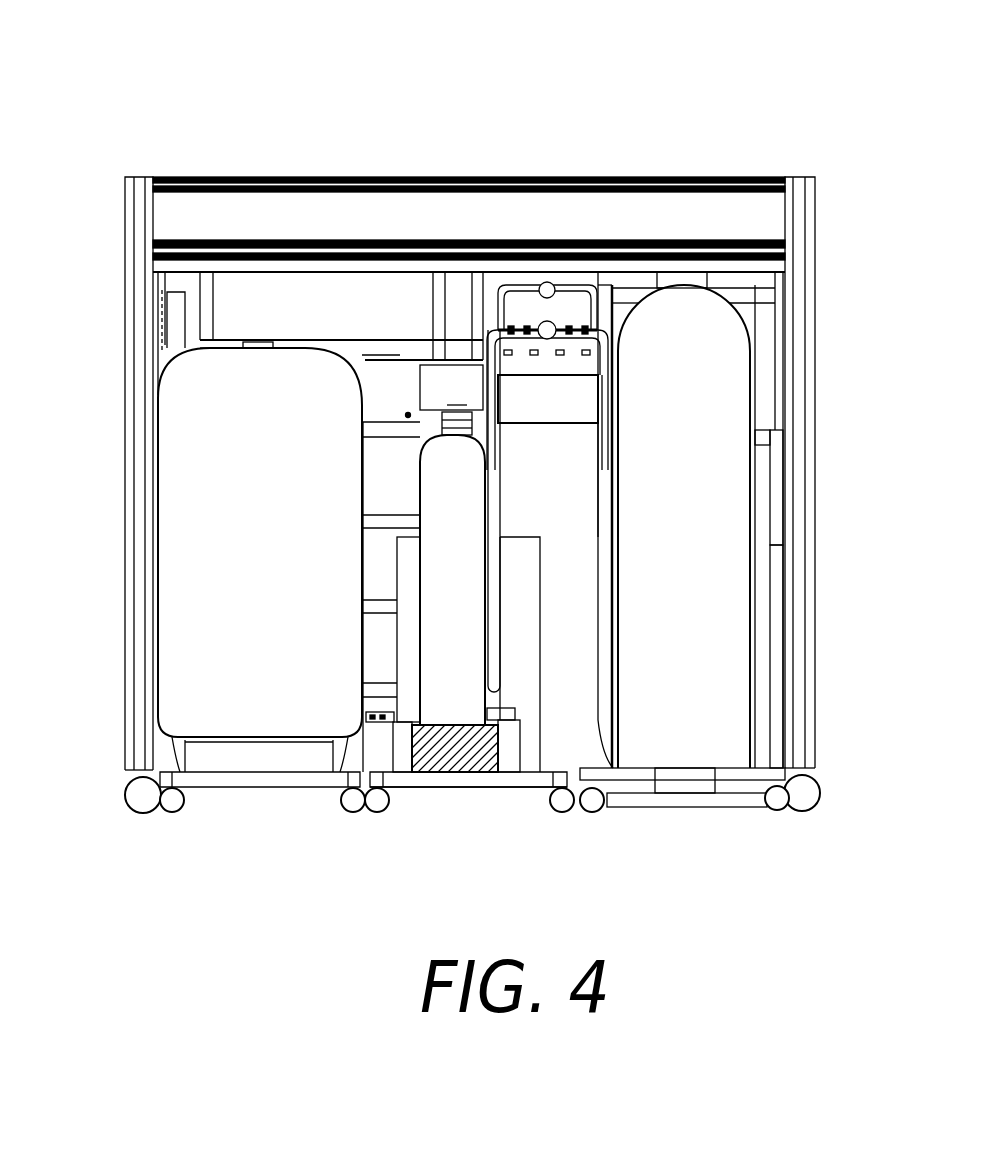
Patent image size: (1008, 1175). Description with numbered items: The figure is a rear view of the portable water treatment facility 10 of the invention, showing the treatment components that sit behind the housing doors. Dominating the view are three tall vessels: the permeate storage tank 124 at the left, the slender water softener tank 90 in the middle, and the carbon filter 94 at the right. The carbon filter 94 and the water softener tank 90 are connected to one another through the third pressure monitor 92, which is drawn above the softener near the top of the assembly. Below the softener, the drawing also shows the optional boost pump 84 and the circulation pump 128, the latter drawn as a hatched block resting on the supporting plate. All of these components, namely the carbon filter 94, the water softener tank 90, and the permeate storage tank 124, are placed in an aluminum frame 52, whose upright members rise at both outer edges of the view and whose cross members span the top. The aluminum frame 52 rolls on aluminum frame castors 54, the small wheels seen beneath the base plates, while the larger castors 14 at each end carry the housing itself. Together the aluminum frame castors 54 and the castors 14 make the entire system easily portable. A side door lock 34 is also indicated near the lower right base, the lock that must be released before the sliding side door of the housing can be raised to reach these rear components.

The portable water treatment facility 10 is at (175, 84).
The castors 14 is at (137, 795).
The side door lock 34 is at (670, 803).
The aluminum frame 52 is at (153, 402).
The aluminum frame castor 54 is at (168, 805).
The boost pump 84 is at (412, 772).
The water softener tank 90 is at (474, 582).
The third pressure monitor 92 is at (548, 283).
The carbon filter 94 is at (692, 571).
The permeate storage tank 124 is at (268, 593).
The circulation pump 128 is at (437, 760).